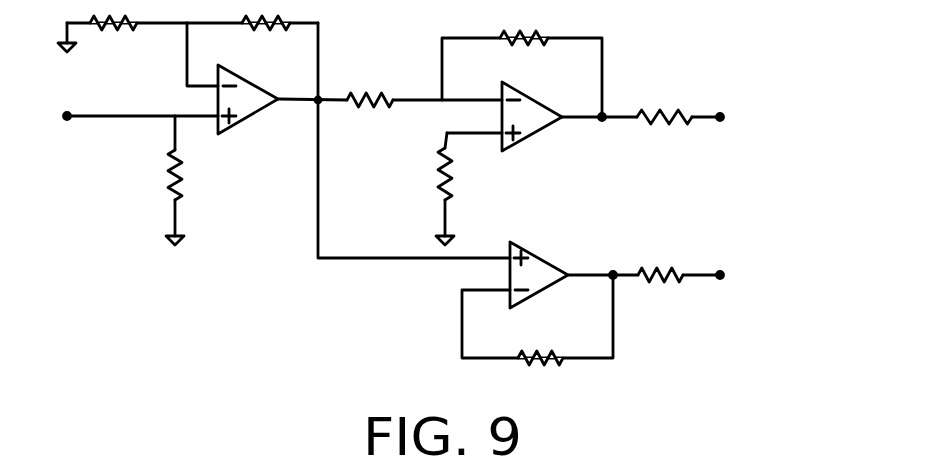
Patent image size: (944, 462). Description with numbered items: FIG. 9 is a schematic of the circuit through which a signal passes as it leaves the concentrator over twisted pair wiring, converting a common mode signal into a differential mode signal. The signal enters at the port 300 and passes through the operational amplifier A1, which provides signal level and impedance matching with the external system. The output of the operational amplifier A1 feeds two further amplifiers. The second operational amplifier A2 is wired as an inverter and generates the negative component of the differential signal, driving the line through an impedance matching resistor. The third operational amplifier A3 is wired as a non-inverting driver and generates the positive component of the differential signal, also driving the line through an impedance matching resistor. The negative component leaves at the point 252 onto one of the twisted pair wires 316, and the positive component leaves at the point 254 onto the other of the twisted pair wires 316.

The port 300 is at (67, 118).
The operational amplifier A1 is at (248, 118).
The second operational amplifier A2 is at (530, 135).
The third operational amplifier A3 is at (538, 292).
The point 252 is at (721, 114).
The point 254 is at (720, 279).
The twisted pair wires 316 is at (729, 117).